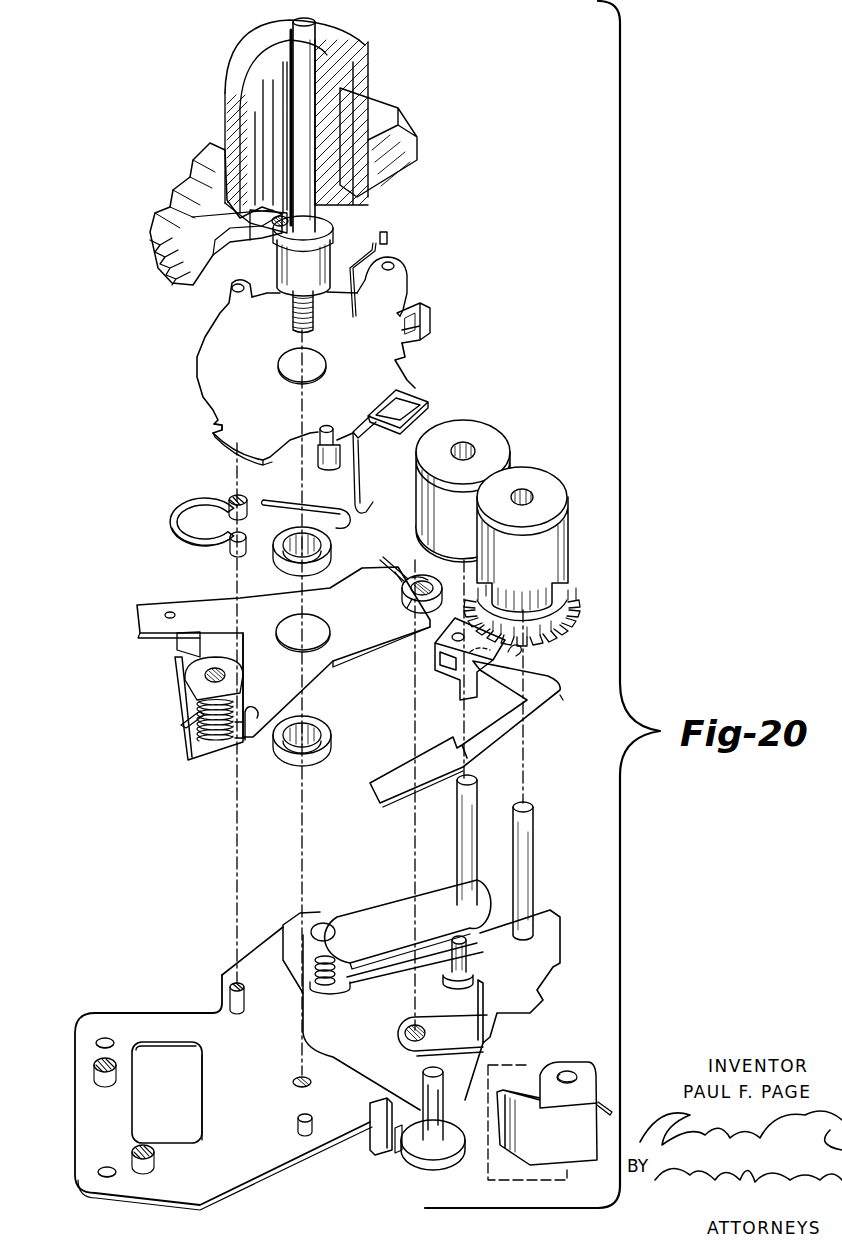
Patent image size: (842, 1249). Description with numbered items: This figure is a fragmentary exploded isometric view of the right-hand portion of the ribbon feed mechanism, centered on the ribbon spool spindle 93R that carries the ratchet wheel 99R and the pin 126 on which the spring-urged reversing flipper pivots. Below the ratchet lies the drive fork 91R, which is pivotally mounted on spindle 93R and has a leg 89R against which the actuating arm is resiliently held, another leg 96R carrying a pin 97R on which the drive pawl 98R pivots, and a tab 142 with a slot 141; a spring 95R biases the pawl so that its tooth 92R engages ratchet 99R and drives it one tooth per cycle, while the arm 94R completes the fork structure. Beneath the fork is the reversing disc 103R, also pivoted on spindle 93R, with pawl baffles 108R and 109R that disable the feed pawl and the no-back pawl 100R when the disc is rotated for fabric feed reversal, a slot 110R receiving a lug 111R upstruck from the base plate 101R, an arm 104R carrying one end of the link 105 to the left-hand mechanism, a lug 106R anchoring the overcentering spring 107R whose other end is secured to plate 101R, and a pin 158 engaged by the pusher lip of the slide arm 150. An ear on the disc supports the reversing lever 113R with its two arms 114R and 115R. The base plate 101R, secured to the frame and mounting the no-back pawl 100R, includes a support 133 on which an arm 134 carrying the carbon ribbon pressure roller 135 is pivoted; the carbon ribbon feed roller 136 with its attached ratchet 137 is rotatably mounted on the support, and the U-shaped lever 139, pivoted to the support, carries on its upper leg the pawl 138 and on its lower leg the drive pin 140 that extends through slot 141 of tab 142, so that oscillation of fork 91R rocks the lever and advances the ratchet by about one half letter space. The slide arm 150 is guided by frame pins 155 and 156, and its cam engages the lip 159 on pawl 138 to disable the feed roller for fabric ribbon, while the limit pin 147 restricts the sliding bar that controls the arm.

The ribbon spool spindle 93R is at (306, 22).
The ratchet wheel 99R is at (207, 280).
The pin 126 is at (280, 238).
The arm of reversing lever 114R is at (352, 262).
The reversing lever 113R is at (375, 246).
The arm of reversing lever 115R is at (408, 293).
The reversing disc 103R is at (403, 363).
The pawl baffle 108R is at (214, 424).
The pawl baffle 109R is at (428, 405).
The slot 110R is at (393, 450).
The arm 104R is at (365, 510).
The pin 158 is at (318, 456).
The link 105 is at (292, 510).
The carbon ribbon pressure roller 135 is at (503, 432).
The carbon ribbon feed roller 136 is at (555, 494).
The ratchet 137 is at (565, 604).
The pawl 138 is at (515, 655).
The drive pin 140 is at (383, 562).
The slot 141 is at (437, 578).
The tab 142 is at (418, 578).
The leg of drive fork 89R is at (148, 608).
The drive fork 91R is at (318, 590).
The lever arm 94R is at (415, 648).
The tooth 92R is at (180, 645).
The pin 97R is at (192, 690).
The spring 95R is at (216, 732).
The drive pawl 98R is at (185, 718).
The leg of drive fork 96R is at (253, 715).
The overcentering spring 107R is at (172, 522).
The lug 106R is at (232, 498).
The lip 159 is at (458, 698).
The slide arm 150 is at (548, 710).
The arm 134 is at (395, 912).
The support 133 is at (402, 965).
The U-shaped lever 139 is at (474, 975).
The base plate 101R is at (190, 1015).
The limit pin 147 is at (97, 1065).
The pin 155 is at (146, 1146).
The pin 156 is at (310, 1128).
The lug 111R is at (375, 1140).
The no-back pawl 100R is at (545, 1085).